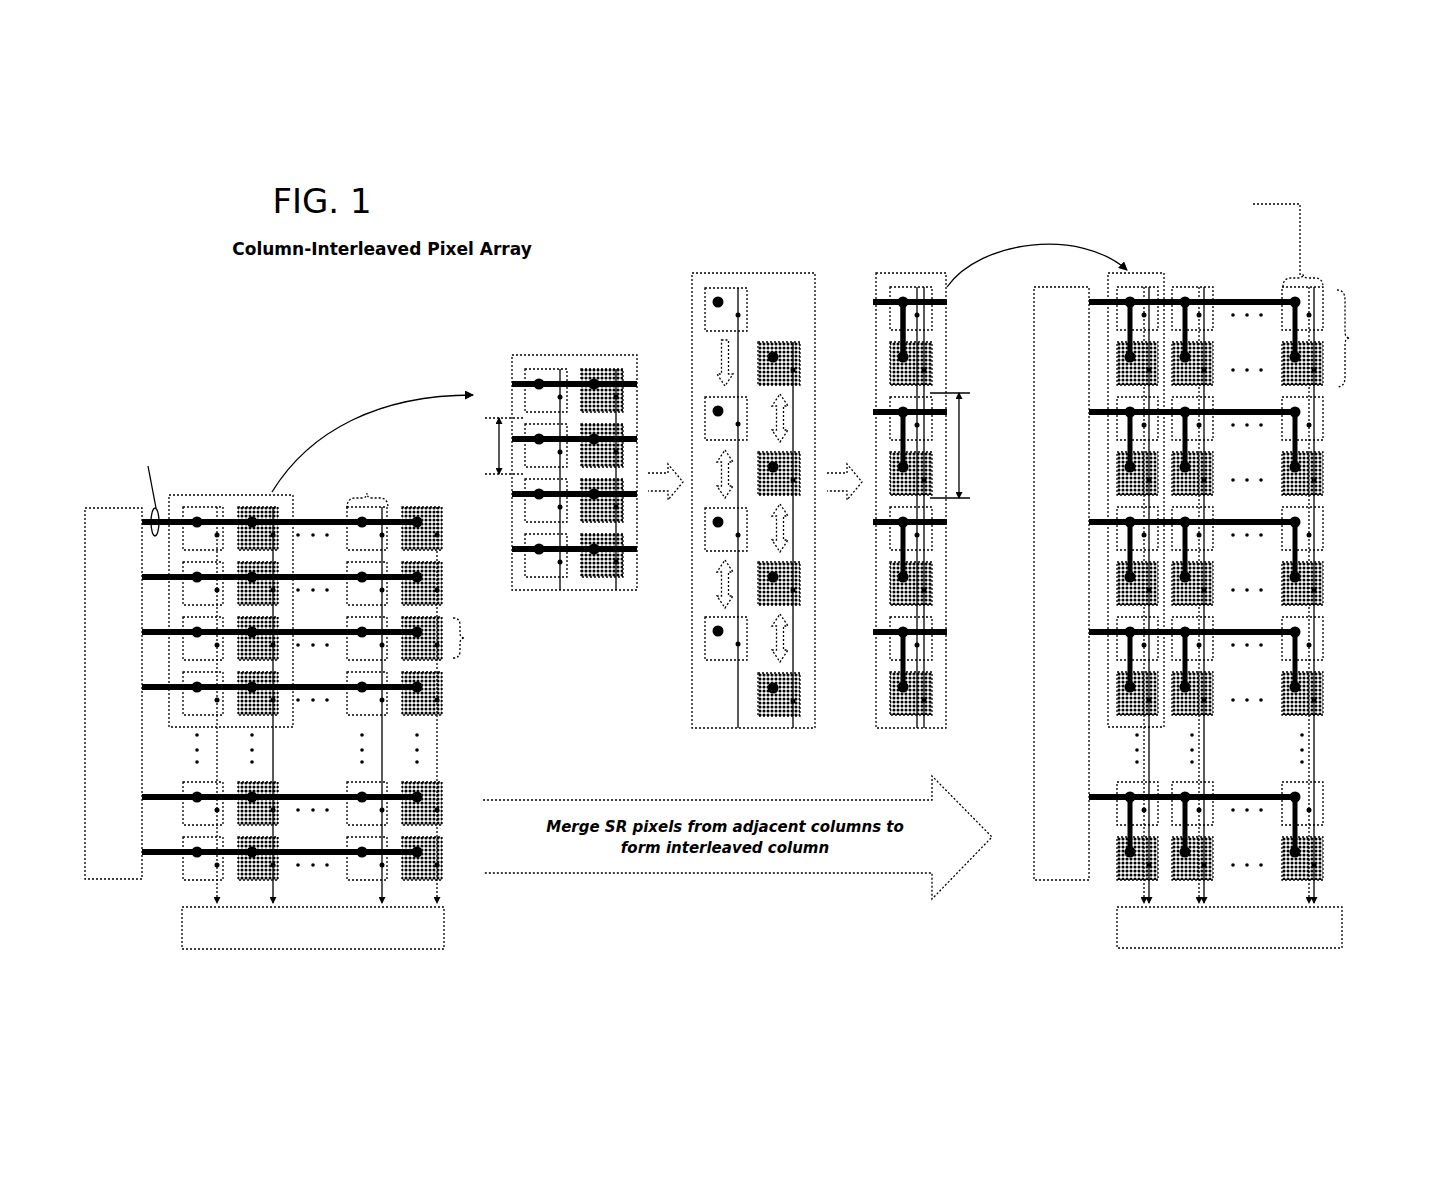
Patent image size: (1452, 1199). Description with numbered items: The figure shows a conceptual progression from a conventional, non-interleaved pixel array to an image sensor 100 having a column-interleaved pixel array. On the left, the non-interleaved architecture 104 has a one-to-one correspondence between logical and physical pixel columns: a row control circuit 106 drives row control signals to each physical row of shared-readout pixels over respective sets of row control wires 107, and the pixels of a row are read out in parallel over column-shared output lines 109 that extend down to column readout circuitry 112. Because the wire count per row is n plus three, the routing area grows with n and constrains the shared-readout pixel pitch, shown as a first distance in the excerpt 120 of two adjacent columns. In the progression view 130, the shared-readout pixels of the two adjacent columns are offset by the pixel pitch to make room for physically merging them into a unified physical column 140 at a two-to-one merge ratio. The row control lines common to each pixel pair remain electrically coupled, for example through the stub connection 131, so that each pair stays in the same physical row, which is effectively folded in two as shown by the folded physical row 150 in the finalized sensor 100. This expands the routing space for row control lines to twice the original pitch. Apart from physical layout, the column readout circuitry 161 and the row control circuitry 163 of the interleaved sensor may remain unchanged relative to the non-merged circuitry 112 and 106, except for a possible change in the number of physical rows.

The image sensor 100 is at (1355, 590).
The non-interleaved architecture 104 is at (473, 743).
The row control circuit 106 is at (113, 693).
The row control wires 107 is at (351, 686).
The column-shared output lines 109 is at (277, 894).
The column readout circuitry 112 is at (313, 928).
The excerpt of two adjacent pixel columns 120 is at (555, 356).
The conceptual progression view 130 is at (758, 274).
The stub connection 131 is at (893, 345).
The unified physical column 140 is at (912, 490).
The folded physical row 150 is at (1253, 337).
The column readout circuitry 161 is at (1229, 927).
The row control circuitry 163 is at (1061, 583).